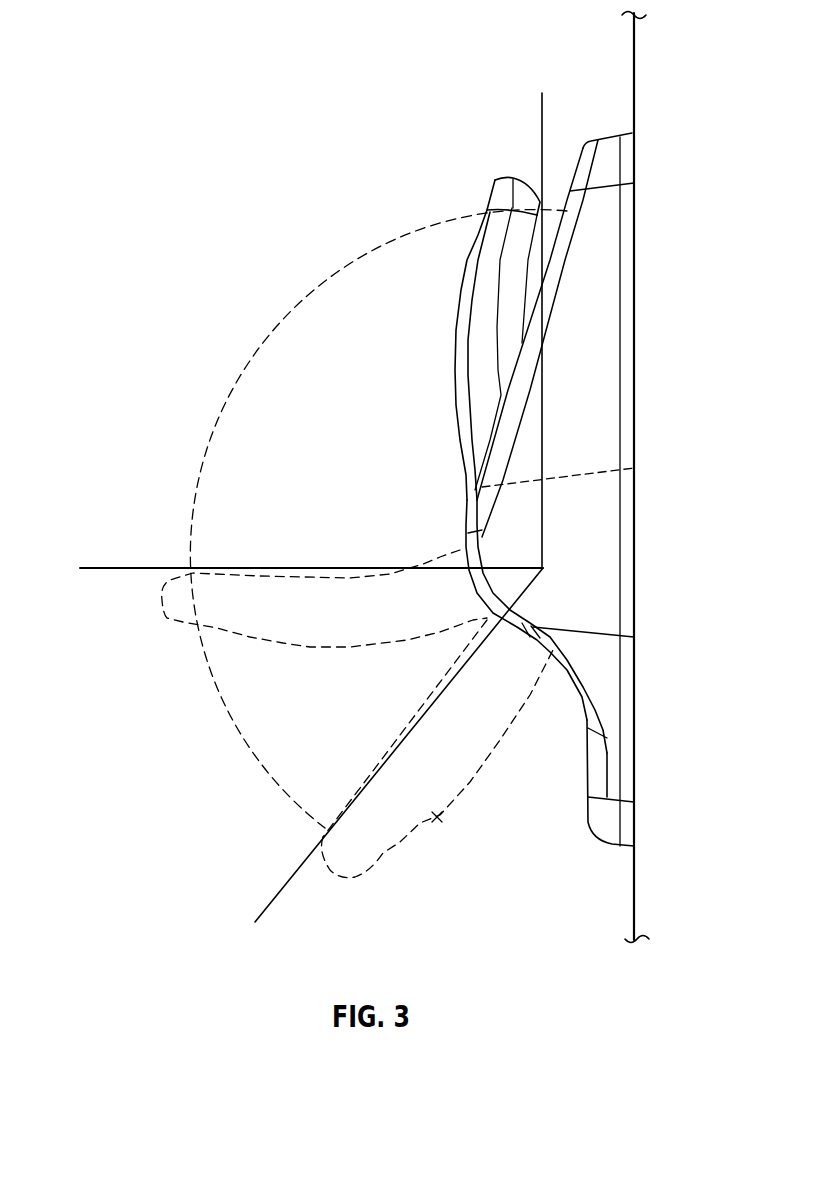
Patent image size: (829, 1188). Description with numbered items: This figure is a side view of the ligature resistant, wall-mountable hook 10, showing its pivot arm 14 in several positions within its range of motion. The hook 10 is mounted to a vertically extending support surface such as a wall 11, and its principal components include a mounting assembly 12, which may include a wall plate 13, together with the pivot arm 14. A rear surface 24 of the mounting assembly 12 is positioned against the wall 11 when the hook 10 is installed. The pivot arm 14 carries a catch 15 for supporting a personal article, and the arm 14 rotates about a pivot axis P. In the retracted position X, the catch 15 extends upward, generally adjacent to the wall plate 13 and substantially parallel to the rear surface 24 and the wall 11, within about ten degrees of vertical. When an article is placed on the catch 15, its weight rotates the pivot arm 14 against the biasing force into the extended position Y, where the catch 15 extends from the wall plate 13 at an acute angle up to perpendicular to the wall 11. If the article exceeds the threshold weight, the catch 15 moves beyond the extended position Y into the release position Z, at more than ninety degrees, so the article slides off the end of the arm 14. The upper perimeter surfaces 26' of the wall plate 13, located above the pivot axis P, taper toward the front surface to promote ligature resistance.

The hook 10 is at (158, 148).
The wall 11 is at (634, 43).
The mounting assembly 12 is at (462, 516).
The wall plate 13 is at (593, 712).
The pivot arm 14 is at (455, 258).
The catch 15 is at (483, 330).
The rear surface 24 is at (493, 428).
The upper perimeter surfaces 26' is at (640, 461).
The retracted position X is at (508, 179).
The extended position Y is at (166, 590).
The release position Z is at (380, 853).
The pivot axis P is at (545, 568).